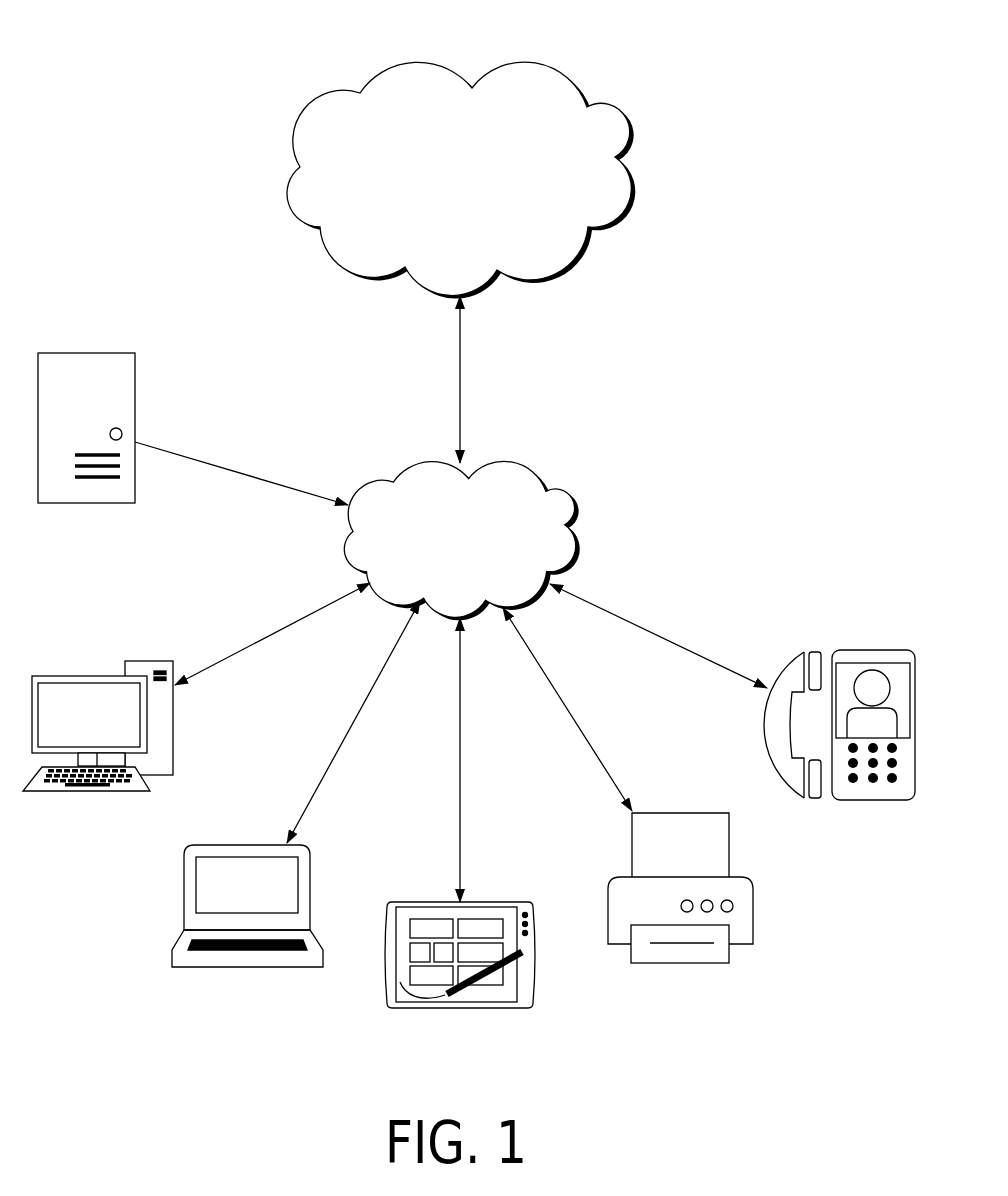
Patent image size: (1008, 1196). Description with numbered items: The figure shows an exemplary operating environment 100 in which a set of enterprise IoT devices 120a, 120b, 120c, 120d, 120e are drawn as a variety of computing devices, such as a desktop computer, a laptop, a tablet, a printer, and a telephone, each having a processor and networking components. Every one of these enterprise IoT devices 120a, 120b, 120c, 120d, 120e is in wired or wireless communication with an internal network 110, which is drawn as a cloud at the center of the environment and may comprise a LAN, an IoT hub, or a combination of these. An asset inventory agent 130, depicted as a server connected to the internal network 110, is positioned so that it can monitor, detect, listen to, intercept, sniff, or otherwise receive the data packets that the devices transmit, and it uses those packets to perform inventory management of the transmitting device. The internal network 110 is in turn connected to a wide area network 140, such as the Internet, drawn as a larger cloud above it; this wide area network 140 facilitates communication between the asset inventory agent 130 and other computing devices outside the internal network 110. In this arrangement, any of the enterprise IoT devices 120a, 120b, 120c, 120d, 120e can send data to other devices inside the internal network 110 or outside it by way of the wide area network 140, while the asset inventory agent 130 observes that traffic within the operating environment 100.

The operating environment 100 is at (104, 91).
The internal network 110 is at (481, 551).
The enterprise IoT device 120a is at (90, 791).
The enterprise IoT device 120b is at (248, 967).
The enterprise IoT device 120c is at (456, 1008).
The enterprise IoT device 120d is at (681, 963).
The enterprise IoT device 120e is at (871, 800).
The asset inventory agent 130 is at (88, 353).
The wide area network 140 is at (481, 190).